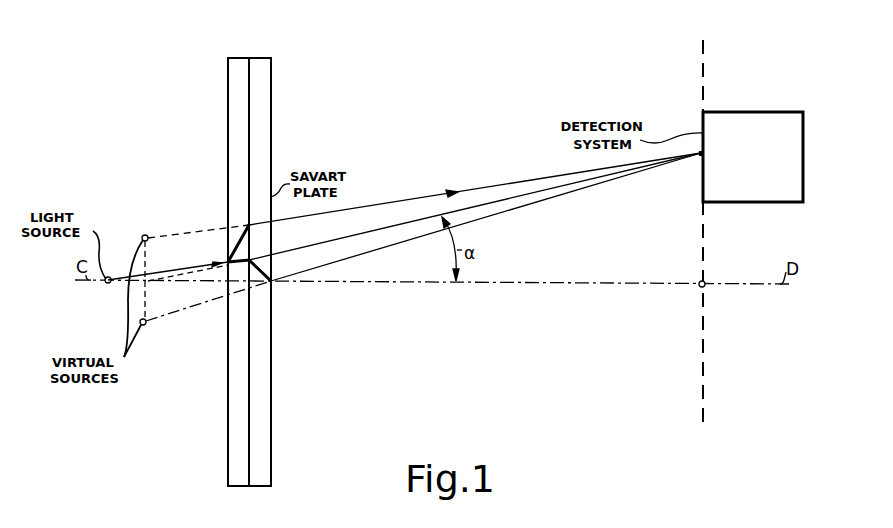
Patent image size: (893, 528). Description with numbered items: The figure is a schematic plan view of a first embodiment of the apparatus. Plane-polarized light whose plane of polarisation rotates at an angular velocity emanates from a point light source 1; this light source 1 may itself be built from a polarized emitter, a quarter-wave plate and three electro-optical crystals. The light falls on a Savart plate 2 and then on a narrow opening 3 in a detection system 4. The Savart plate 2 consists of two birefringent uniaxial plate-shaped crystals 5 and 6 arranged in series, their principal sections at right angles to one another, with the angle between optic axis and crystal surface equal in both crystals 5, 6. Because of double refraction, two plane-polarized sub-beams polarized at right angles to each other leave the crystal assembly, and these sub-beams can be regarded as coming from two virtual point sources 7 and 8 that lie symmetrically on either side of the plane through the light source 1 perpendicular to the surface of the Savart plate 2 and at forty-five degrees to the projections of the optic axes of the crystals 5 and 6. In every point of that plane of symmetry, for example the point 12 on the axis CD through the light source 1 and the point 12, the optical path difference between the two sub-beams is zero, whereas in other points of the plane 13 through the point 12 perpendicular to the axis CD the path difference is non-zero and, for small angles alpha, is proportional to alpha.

The light source 1 is at (108, 268).
The Savart plate 2 is at (273, 83).
The narrow opening 3 is at (700, 158).
The detection system 4 is at (772, 111).
The birefringent uniaxial plate-shaped crystal 5 is at (235, 141).
The birefringent uniaxial plate-shaped crystal 6 is at (316, 113).
The virtual point source 7 is at (190, 230).
The virtual point source 8 is at (205, 313).
The point 12 is at (704, 287).
The detection plane 13 is at (703, 73).